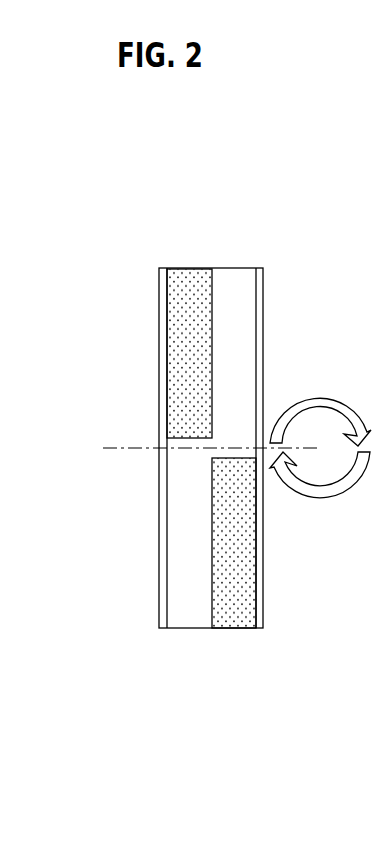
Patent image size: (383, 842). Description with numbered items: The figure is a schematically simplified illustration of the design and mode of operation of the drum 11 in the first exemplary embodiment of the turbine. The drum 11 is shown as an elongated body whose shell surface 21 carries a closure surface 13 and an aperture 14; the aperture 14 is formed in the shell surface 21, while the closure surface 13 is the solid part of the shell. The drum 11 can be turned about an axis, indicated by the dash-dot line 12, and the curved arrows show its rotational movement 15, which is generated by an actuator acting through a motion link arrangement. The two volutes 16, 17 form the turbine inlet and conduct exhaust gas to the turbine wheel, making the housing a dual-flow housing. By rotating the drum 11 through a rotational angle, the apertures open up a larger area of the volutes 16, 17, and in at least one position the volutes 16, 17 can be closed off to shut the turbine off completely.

The drum 11 is at (263, 302).
The rotation axis 12 is at (138, 450).
The closure surface 13 is at (242, 338).
The aperture 14 is at (182, 303).
The rotational movement 15 is at (305, 398).
The volute 16 is at (236, 214).
The volute 17 is at (191, 680).
The shell surface 21 is at (238, 628).